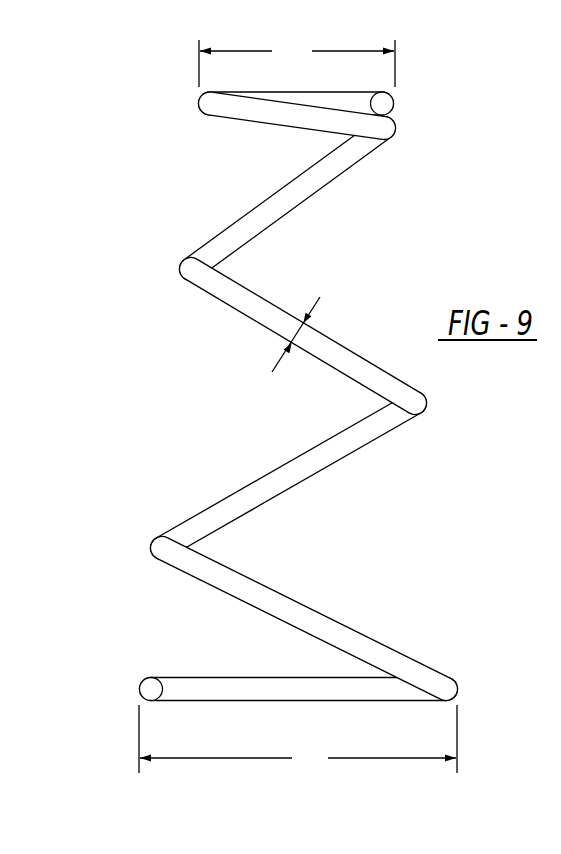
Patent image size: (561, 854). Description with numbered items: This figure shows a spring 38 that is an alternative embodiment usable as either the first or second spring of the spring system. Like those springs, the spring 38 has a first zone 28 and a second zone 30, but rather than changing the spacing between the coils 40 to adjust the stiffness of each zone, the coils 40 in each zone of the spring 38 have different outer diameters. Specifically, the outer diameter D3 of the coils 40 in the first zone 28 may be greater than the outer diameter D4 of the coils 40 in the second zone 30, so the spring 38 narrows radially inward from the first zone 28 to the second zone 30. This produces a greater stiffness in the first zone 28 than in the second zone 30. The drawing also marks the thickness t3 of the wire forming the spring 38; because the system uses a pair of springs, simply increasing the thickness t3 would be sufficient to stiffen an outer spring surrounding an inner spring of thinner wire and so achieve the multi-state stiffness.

The first zone 28 is at (115, 697).
The second zone 30 is at (268, 290).
The spring 38 is at (289, 396).
The coils 40 is at (404, 135).
The outer diameter of coils in first zone D3 is at (298, 741).
The outer diameter of coils in second zone D4 is at (297, 63).
The thickness of wire t3 is at (293, 353).